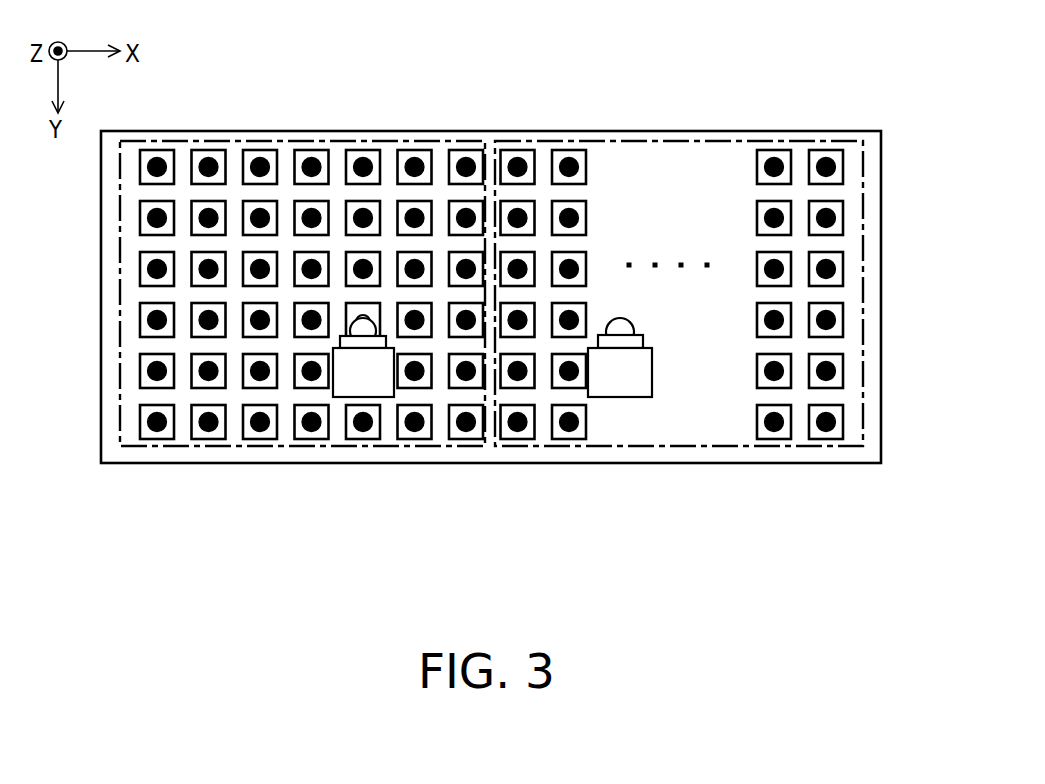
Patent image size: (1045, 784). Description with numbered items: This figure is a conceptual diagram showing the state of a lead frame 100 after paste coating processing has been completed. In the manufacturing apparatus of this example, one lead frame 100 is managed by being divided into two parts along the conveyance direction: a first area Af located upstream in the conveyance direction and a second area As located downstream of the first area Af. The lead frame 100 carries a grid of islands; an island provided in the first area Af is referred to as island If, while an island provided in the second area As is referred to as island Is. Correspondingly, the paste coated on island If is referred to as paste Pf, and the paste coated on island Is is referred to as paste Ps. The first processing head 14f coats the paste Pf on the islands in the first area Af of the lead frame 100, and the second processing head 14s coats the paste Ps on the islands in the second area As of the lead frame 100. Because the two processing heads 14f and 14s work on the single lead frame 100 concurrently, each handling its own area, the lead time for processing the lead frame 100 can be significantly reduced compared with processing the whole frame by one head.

The lead frame 100 is at (636, 131).
The paste Pf is at (140, 269).
The paste Ps is at (843, 269).
The island If is at (140, 371).
The island Is is at (843, 371).
The first processing head 14f is at (385, 397).
The second processing head 14s is at (613, 397).
The first area Af is at (297, 446).
The second area As is at (688, 446).